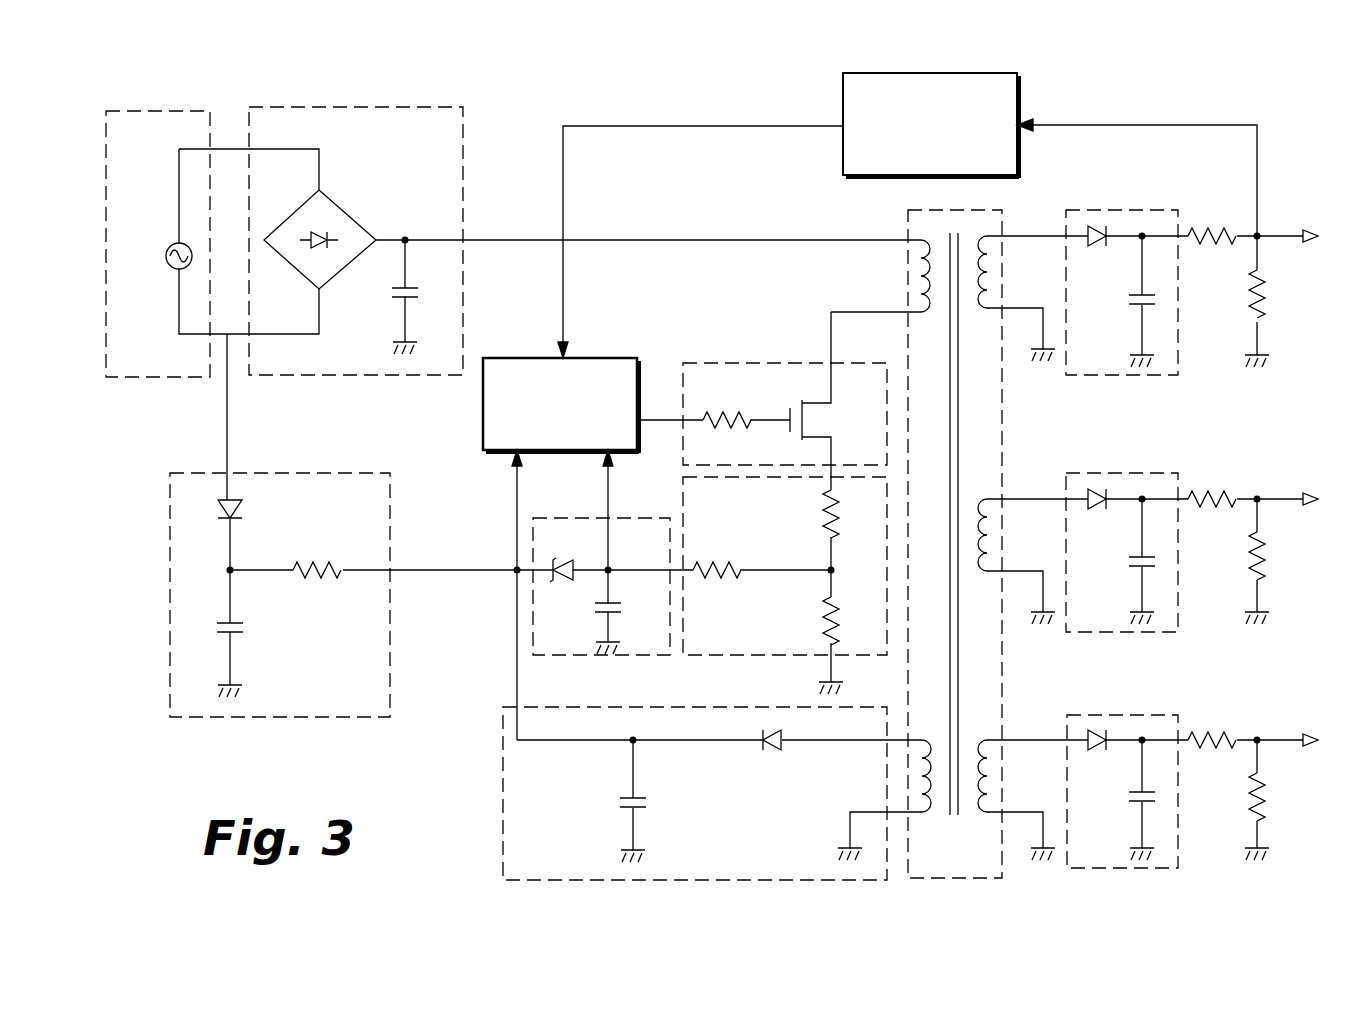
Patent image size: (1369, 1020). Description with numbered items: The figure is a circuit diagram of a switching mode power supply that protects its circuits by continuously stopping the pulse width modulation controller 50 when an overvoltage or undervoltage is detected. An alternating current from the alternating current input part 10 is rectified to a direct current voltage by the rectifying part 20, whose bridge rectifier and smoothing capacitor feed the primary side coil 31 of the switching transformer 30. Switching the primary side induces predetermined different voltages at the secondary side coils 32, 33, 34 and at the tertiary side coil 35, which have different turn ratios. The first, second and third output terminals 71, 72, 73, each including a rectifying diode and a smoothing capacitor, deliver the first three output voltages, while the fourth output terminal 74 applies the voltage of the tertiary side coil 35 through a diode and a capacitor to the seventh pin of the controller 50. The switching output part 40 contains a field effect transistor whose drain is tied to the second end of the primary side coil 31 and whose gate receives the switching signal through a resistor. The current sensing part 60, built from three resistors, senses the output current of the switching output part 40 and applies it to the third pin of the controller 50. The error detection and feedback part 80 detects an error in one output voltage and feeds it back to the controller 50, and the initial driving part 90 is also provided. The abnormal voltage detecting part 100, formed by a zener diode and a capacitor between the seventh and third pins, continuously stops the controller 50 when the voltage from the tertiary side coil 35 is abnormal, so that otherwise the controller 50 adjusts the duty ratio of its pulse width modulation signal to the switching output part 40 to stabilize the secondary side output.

The alternating current input part 10 is at (152, 110).
The rectifying part 20 is at (355, 107).
The switching transformer 30 is at (952, 539).
The primary side coil 31 is at (927, 312).
The first secondary side coil 32 is at (980, 312).
The second secondary side coil 33 is at (980, 496).
The third secondary side coil 34 is at (988, 738).
The tertiary side coil 35 is at (922, 738).
The switching output part 40 is at (735, 363).
The pulse width modulation controller 50 is at (597, 358).
The current sensing part 60 is at (683, 503).
The first output terminal 71 is at (1088, 210).
The second output terminal 72 is at (1088, 473).
The third output terminal 73 is at (1078, 715).
The fourth output terminal 74 is at (503, 820).
The error detection and feedback part 80 is at (935, 73).
The initial driving part 90 is at (170, 587).
The abnormal voltage detecting part 100 is at (533, 582).